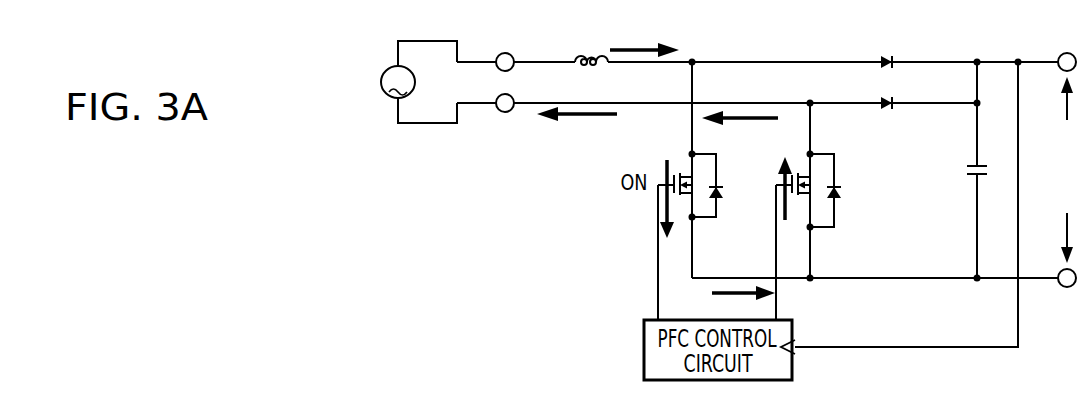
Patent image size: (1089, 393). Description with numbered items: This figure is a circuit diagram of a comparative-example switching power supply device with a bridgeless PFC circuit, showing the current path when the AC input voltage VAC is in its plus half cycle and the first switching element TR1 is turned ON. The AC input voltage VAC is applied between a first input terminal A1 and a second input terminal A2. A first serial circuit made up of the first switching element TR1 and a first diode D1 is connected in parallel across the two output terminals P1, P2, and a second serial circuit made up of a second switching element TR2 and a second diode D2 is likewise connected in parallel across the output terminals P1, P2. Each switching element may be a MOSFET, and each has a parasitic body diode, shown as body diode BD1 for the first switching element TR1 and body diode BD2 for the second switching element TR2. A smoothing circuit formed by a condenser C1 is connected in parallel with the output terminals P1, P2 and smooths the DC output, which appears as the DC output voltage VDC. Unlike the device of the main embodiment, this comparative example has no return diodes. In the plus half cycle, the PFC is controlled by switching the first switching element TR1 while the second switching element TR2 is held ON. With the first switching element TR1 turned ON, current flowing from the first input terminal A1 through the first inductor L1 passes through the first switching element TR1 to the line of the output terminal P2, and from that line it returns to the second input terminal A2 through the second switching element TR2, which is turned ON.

The AC input voltage VAC is at (396, 82).
The first input terminal A1 is at (505, 49).
The second input terminal A2 is at (505, 118).
The first inductor L1 is at (591, 47).
The first switching element TR1 is at (670, 163).
The second switching element TR2 is at (782, 176).
The body diode of the first switching element BD1 is at (725, 188).
The body diode of the second switching element BD2 is at (845, 190).
The first diode D1 is at (887, 49).
The second diode D2 is at (887, 117).
The condenser C1 is at (965, 170).
The output terminal P1 is at (1067, 50).
The output terminal P2 is at (1067, 293).
The DC output voltage VDC is at (1069, 170).